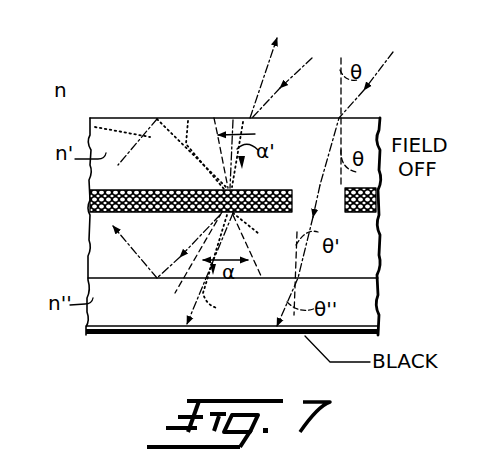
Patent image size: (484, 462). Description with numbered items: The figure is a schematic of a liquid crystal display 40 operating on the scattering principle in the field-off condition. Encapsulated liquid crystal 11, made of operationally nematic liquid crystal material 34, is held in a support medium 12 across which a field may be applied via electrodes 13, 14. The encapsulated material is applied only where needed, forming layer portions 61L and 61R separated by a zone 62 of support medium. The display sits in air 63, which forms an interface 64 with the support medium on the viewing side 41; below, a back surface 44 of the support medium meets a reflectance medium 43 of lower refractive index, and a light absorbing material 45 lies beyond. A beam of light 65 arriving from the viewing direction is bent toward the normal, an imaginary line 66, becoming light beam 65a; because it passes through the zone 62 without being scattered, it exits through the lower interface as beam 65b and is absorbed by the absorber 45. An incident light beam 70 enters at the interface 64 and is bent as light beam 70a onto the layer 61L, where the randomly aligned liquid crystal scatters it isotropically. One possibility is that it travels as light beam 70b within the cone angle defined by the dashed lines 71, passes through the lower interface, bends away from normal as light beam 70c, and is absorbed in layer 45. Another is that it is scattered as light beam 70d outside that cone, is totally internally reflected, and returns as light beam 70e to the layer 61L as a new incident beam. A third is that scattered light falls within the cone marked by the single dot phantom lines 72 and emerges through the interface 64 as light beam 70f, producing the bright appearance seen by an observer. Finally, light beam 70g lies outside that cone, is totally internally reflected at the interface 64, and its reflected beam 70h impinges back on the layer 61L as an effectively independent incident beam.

The liquid crystal display 40 is at (163, 77).
The air 63 is at (117, 73).
The viewing side 41 is at (201, 49).
The interface 64 is at (145, 118).
The light beam 70g is at (190, 118).
The single dot phantom lines 72 is at (212, 113).
The light beam 70f is at (258, 57).
The incident light beam 70 is at (267, 108).
The normal line 66 is at (340, 66).
The beam of light 65 is at (386, 60).
The light beam 70a is at (270, 108).
The support medium 12 is at (382, 118).
The reflected beam 70h is at (95, 127).
The electrode 14 is at (120, 190).
The liquid crystal material 34 is at (76, 188).
The encapsulated liquid crystal layer portion 61L is at (88, 197).
The encapsulated liquid crystal layer portion 61R is at (377, 200).
The encapsulated liquid crystal 11 is at (91, 212).
The electrode 13 is at (93, 226).
The light beam 65a is at (318, 174).
The light beam 70d is at (205, 222).
The light beam 70e is at (116, 234).
The light beam 70b is at (264, 229).
The dashed lines 71 is at (220, 261).
The light beam 70c is at (219, 268).
The beam 65b is at (258, 334).
The zone 62 is at (335, 216).
The back surface 44 is at (380, 253).
The reflectance medium 43 is at (380, 303).
The light absorbing material 45 is at (378, 333).